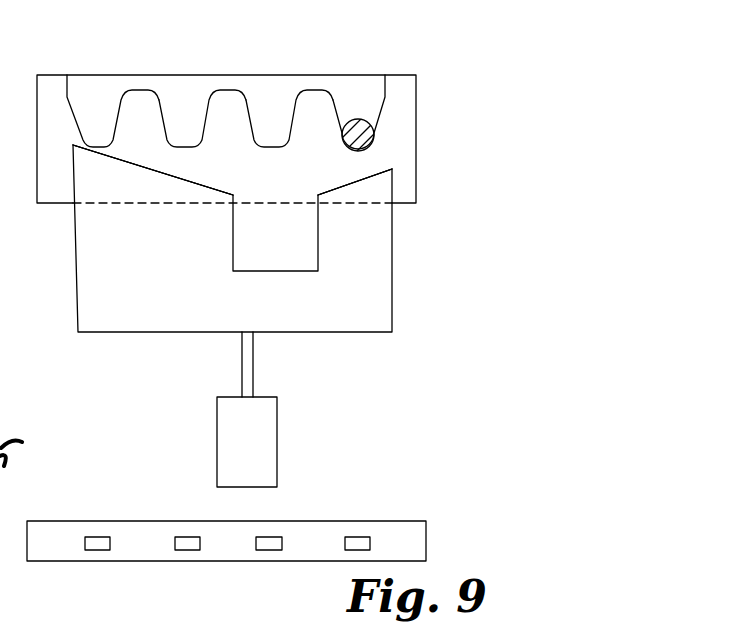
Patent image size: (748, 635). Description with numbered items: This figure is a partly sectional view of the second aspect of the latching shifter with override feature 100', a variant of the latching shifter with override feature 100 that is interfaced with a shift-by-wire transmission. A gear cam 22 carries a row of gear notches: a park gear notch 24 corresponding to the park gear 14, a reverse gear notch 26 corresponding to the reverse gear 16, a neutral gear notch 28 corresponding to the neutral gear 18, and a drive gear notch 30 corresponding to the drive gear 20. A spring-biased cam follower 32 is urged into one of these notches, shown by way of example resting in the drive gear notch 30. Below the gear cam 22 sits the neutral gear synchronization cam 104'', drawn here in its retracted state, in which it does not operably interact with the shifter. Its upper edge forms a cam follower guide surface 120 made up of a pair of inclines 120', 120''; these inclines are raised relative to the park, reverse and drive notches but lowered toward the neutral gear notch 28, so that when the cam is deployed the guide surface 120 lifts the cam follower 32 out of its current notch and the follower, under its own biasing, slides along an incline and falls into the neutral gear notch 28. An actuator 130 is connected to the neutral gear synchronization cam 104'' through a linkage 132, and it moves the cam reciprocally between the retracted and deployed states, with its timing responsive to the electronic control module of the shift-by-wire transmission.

The gear cam 22 is at (421, 97).
The park gear notch 24 is at (98, 122).
The reverse gear notch 26 is at (180, 117).
The neutral gear notch 28 is at (263, 112).
The drive gear notch 30 is at (360, 112).
The cam follower 32 is at (355, 119).
The cam follower guide surface 120 is at (232, 170).
The incline 120' is at (333, 111).
The incline 120'' is at (153, 111).
The neutral gear synchronization cam 104'' is at (255, 238).
The linkage 132 is at (242, 353).
The actuator 130 is at (278, 428).
The latching shifter with override feature 100' is at (118, 429).
The latching shifter with override feature 100 is at (213, 552).
The park gear 14 is at (107, 537).
The reverse gear 16 is at (187, 537).
The neutral gear 18 is at (269, 537).
The drive gear 20 is at (357, 537).